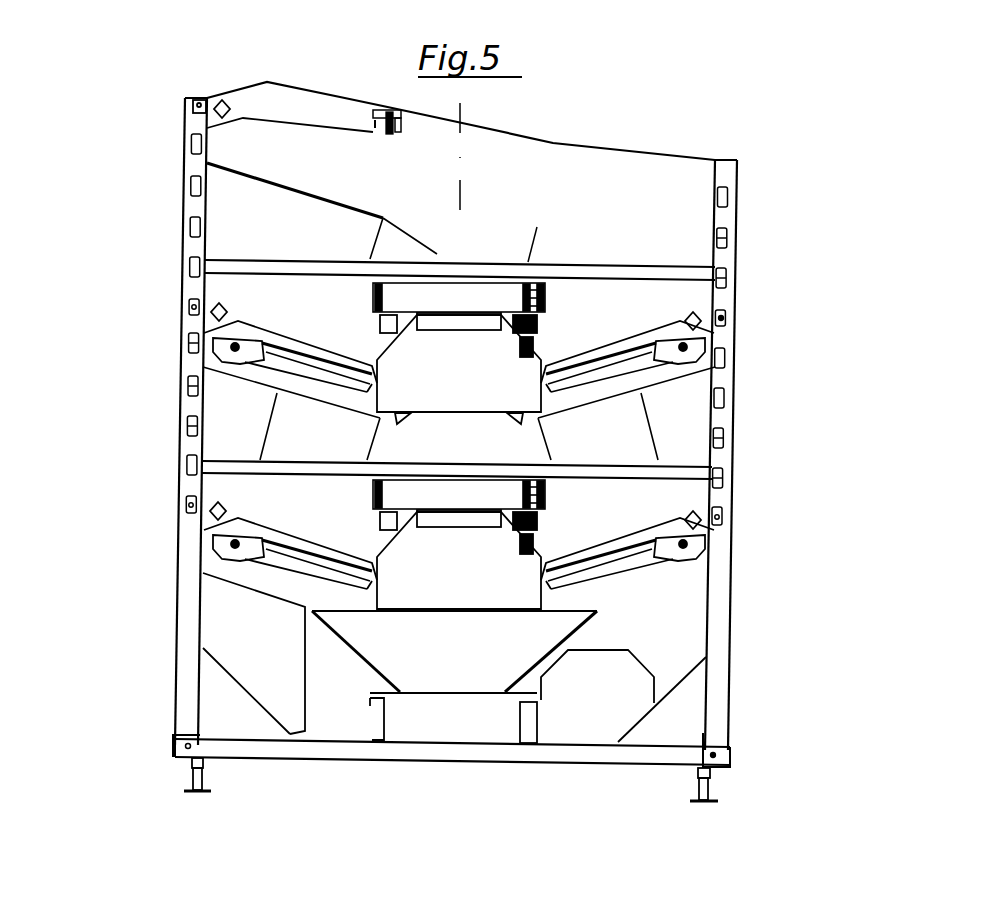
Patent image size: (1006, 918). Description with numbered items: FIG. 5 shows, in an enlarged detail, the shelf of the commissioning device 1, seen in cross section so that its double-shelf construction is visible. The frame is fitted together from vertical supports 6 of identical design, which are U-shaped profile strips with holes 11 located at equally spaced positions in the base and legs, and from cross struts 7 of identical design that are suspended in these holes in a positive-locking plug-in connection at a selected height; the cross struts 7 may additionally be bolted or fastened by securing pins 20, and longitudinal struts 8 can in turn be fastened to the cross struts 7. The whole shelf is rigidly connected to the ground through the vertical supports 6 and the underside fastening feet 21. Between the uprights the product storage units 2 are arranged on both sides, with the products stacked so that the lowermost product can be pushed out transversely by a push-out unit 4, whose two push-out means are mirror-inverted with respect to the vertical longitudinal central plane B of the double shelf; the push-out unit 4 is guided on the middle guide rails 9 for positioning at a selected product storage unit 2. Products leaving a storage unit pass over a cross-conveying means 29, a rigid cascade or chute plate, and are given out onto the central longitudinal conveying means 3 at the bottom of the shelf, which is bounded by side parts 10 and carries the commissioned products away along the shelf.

The commissioning device 1 is at (923, 173).
The product storage unit 2 is at (300, 228).
The longitudinal conveying means 3 is at (470, 697).
The push-out unit 4 is at (700, 356).
The vertical support 6 is at (180, 587).
The cross strut 7 is at (267, 93).
The longitudinal strut 8 is at (192, 108).
The guide rail 9 is at (375, 292).
The side part 10 is at (375, 742).
The hole 11 is at (732, 195).
The securing pin 20 is at (722, 318).
The fastening foot 21 is at (187, 780).
The cross-conveying means 29 is at (557, 652).
The vertical longitudinal central plane B is at (463, 188).